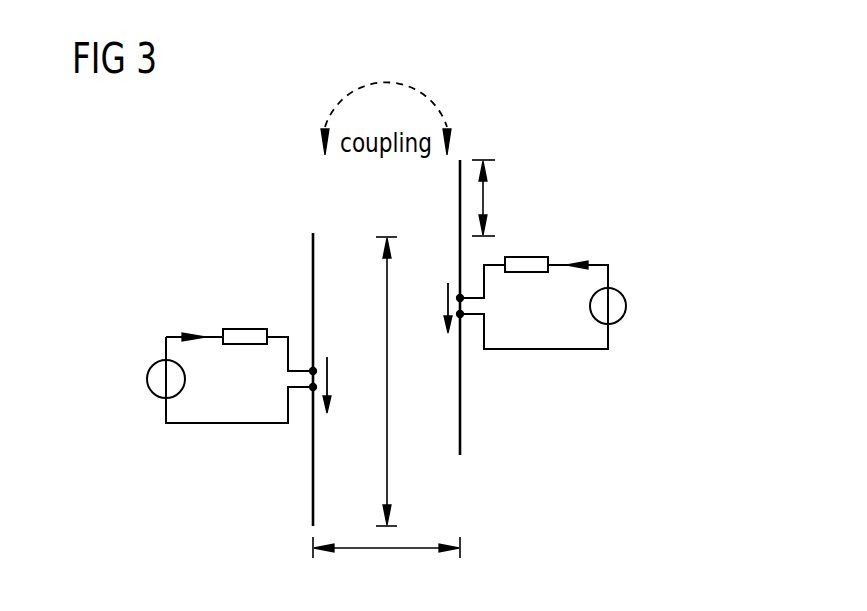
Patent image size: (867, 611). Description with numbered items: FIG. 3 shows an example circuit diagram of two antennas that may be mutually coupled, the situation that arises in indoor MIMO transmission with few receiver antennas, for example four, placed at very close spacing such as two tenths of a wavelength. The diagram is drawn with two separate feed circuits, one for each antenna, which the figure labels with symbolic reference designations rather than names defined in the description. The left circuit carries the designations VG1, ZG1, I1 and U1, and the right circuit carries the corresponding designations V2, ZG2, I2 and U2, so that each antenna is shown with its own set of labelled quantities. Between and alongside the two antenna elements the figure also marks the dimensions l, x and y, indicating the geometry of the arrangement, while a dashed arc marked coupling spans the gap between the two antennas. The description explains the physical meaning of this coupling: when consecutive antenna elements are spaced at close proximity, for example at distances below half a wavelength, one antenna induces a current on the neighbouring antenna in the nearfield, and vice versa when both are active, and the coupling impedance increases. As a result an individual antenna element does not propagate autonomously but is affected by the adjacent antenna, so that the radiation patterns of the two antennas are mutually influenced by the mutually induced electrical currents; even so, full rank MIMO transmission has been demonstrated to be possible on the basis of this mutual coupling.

The voltage source of first antenna circuit VG1 is at (147, 379).
The source impedance of first antenna circuit ZG1 is at (245, 329).
The current in first antenna I1 is at (197, 323).
The voltage at first antenna feed point U1 is at (359, 391).
The antenna length l is at (390, 381).
The distance between antennas x is at (386, 556).
The offset of second antenna feed point y is at (488, 198).
The source impedance of second antenna circuit ZG2 is at (525, 257).
The current in second antenna I2 is at (580, 252).
The voltage at second antenna feed point U2 is at (428, 300).
The voltage source of second antenna circuit V2 is at (626, 306).